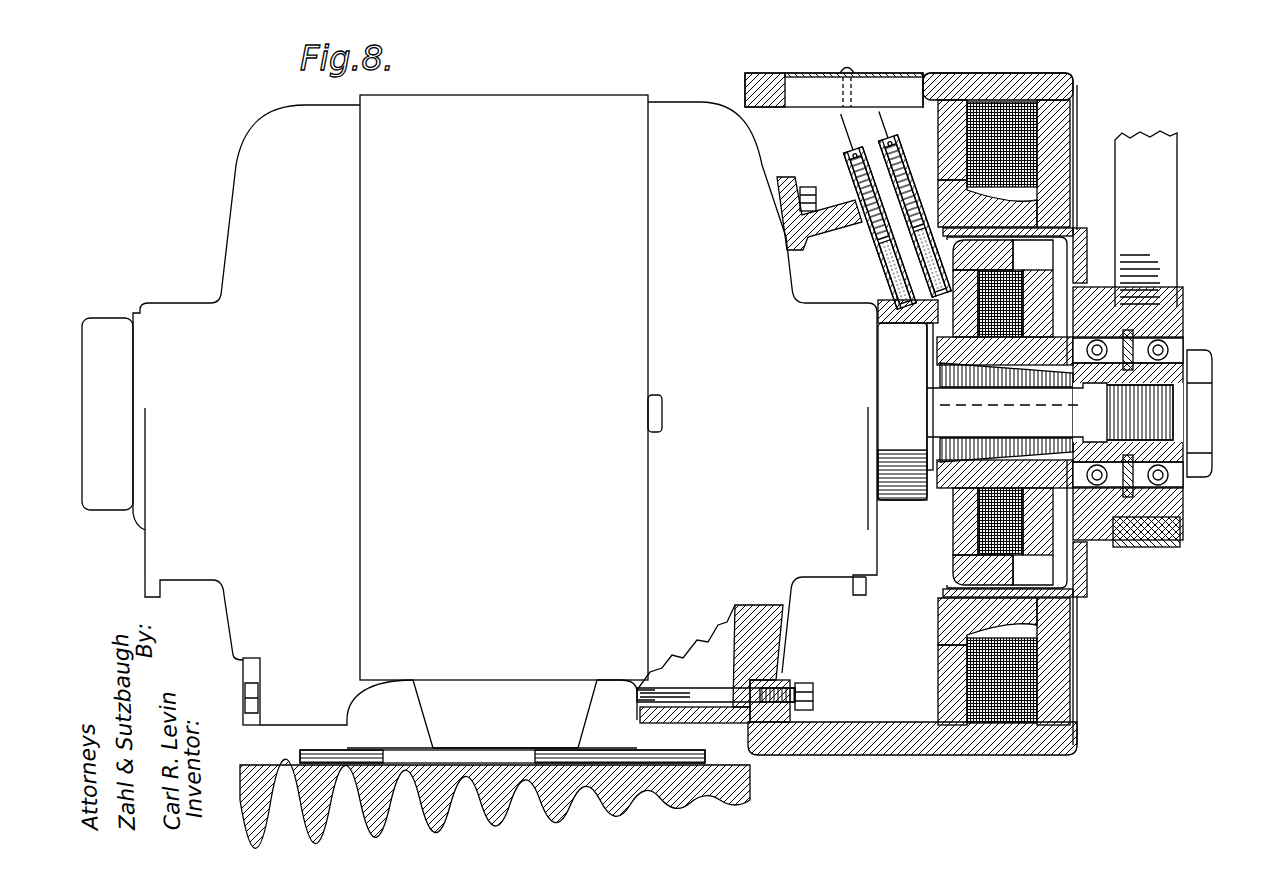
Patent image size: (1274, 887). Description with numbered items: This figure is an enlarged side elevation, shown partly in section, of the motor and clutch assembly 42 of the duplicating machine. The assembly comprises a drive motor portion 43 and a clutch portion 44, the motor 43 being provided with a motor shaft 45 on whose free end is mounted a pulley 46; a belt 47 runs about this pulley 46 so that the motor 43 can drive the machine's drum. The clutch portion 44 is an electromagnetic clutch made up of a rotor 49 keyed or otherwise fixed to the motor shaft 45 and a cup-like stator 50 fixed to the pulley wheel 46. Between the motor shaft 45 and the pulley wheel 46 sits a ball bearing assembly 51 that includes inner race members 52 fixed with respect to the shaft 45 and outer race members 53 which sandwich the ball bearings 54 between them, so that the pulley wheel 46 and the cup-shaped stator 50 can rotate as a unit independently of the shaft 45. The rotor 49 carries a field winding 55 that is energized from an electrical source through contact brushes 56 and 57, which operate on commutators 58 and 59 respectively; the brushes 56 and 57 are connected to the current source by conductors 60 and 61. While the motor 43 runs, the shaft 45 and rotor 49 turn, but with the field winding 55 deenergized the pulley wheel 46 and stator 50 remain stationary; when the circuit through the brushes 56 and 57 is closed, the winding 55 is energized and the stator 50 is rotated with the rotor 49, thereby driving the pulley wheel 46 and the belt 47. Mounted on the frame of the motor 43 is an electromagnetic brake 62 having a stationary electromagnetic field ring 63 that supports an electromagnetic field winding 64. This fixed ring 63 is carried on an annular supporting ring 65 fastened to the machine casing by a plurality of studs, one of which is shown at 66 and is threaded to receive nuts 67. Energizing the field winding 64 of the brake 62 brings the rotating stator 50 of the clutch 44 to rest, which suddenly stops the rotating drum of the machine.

The motor and clutch assembly 42 is at (227, 185).
The drive motor portion 43 is at (535, 106).
The clutch portion 44 is at (1099, 593).
The motor shaft 45 is at (1050, 412).
The pulley 46 is at (1185, 296).
The belt 47 is at (1163, 222).
The rotor 49 is at (938, 548).
The cup-like stator 50 is at (1073, 234).
The ball bearing assembly 51 is at (1190, 337).
The inner race members 52 is at (1195, 372).
The outer race members 53 is at (1183, 493).
The ball bearings 54 is at (1173, 475).
The field winding 55 is at (983, 573).
The contact brush 56 is at (863, 253).
The contact brush 57 is at (880, 273).
The commutator 58 is at (900, 320).
The commutator 59 is at (932, 293).
The conductor 60 is at (848, 127).
The conductor 61 is at (878, 132).
The electromagnetic brake 62 is at (1087, 109).
The stationary electromagnetic field ring 63 is at (1057, 140).
The electromagnetic field winding 64 is at (1030, 120).
The annular supporting ring 65 is at (952, 75).
The stud 66 is at (770, 695).
The nuts 67 is at (815, 695).